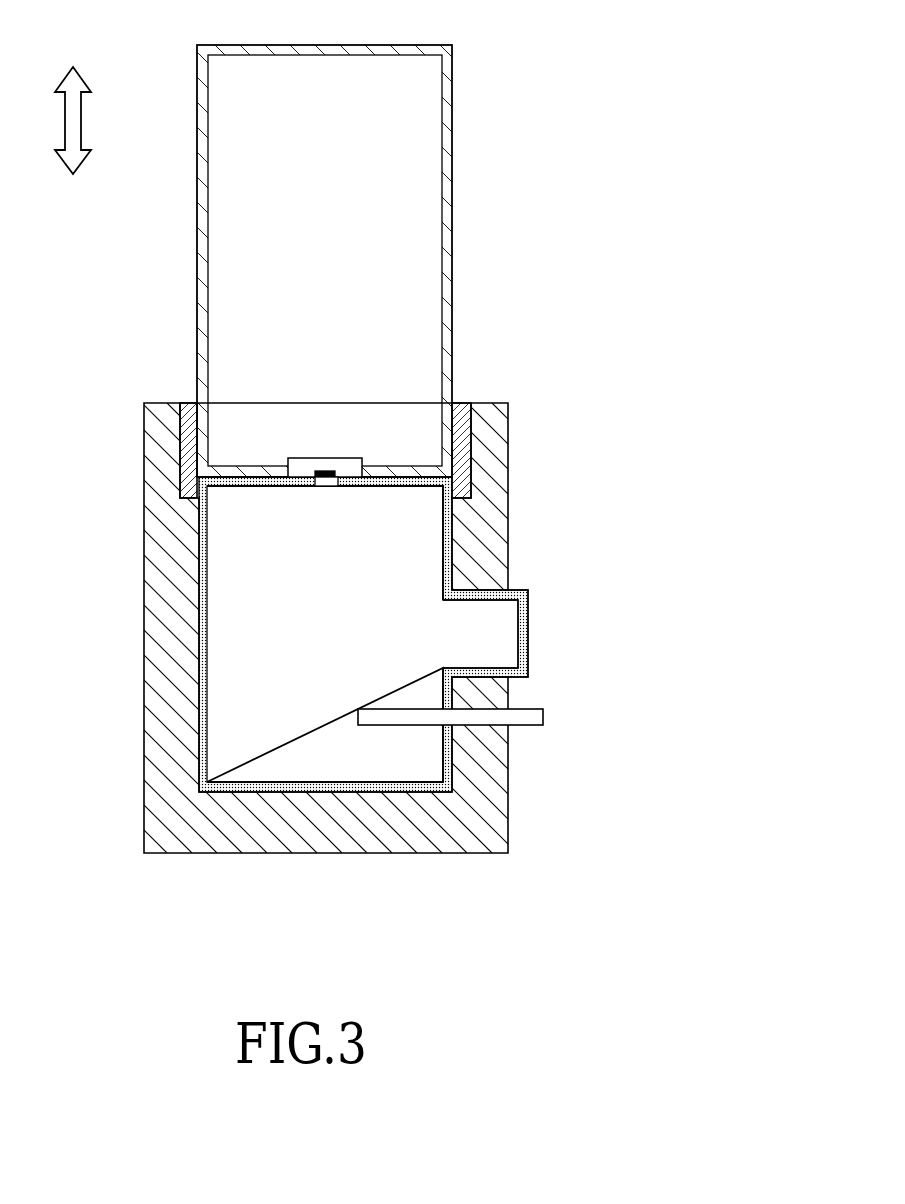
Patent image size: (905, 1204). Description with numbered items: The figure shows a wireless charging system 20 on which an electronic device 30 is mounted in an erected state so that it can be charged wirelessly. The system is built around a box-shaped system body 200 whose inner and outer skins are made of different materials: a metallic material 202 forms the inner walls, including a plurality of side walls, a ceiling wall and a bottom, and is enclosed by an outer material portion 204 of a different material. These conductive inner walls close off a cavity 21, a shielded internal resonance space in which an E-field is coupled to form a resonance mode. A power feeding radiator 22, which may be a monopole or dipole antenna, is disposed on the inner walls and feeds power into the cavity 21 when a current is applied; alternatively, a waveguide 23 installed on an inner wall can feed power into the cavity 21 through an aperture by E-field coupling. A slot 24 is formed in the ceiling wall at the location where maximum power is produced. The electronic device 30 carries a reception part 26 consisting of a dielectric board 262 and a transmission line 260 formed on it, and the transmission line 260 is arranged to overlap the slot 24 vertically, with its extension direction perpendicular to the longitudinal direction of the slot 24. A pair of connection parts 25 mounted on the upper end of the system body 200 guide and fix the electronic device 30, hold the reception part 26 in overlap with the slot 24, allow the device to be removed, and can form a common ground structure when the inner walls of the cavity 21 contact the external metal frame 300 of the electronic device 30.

The wireless charging system 20 is at (452, 581).
The system body 200 is at (452, 628).
The outer material portion 204 is at (173, 742).
The metallic material 202 is at (205, 695).
The cavity 21 is at (227, 650).
The power feeding radiator 22 is at (537, 707).
The waveguide 23 is at (498, 612).
The slot 24 is at (323, 486).
The connection part 25 is at (189, 403).
The reception part 26 is at (322, 437).
The transmission line 260 is at (330, 474).
The dielectric board 262 is at (323, 462).
The electronic device 30 is at (436, 261).
The external metal frame 300 is at (445, 242).